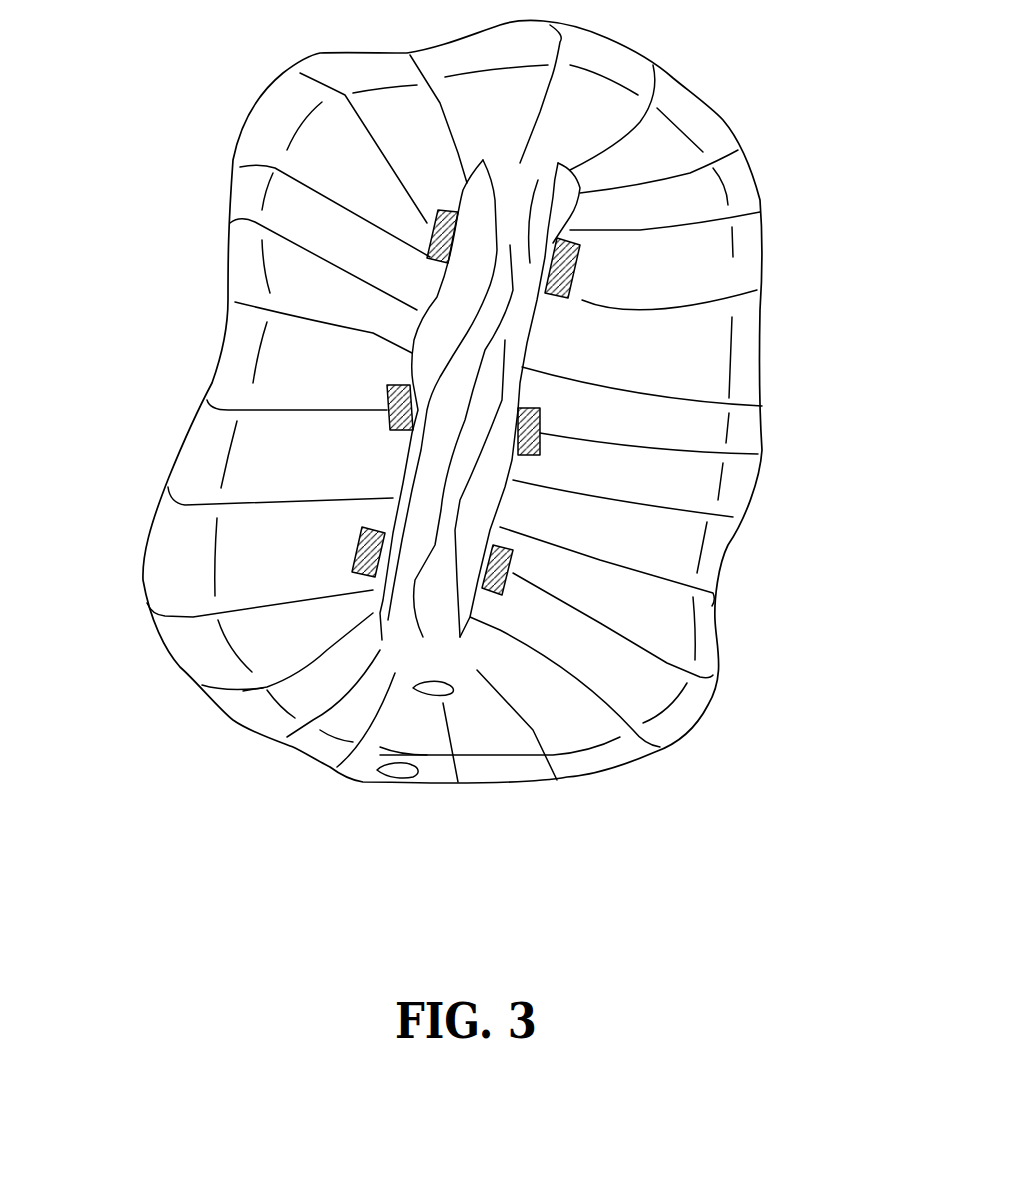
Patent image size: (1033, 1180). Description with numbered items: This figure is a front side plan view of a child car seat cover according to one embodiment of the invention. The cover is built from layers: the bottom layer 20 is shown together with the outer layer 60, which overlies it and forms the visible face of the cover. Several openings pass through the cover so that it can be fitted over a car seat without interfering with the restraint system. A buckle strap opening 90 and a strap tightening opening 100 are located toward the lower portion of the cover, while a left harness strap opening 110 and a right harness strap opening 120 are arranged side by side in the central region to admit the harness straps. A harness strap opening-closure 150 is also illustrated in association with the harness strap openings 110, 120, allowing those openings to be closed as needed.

The bottom layer 20 is at (237, 550).
The outer layer 60 is at (690, 117).
The buckle strap opening 90 is at (413, 688).
The strap tightening opening 100 is at (380, 770).
The left harness strap opening 110 is at (445, 337).
The right harness strap opening 120 is at (490, 495).
The harness strap opening-closure 150 is at (568, 267).